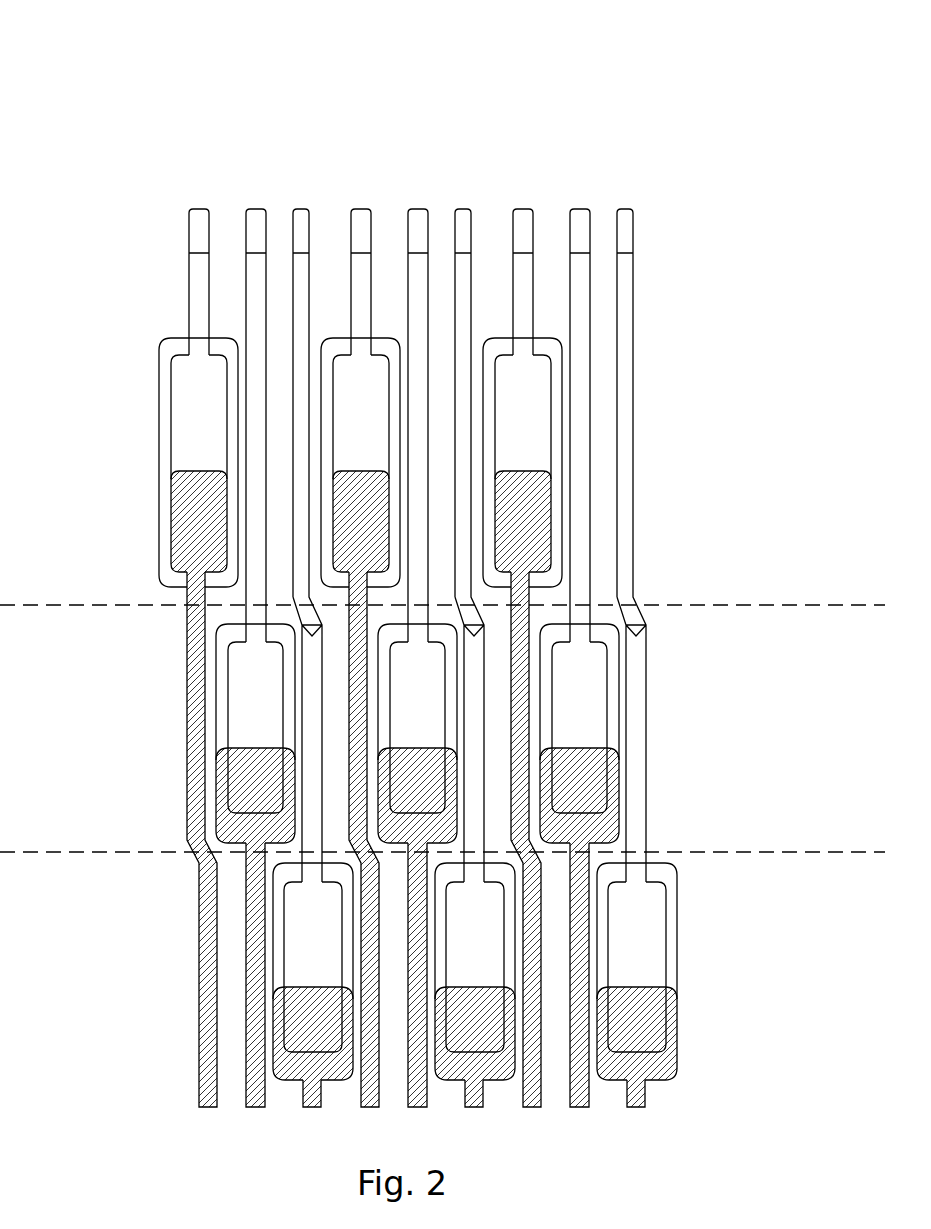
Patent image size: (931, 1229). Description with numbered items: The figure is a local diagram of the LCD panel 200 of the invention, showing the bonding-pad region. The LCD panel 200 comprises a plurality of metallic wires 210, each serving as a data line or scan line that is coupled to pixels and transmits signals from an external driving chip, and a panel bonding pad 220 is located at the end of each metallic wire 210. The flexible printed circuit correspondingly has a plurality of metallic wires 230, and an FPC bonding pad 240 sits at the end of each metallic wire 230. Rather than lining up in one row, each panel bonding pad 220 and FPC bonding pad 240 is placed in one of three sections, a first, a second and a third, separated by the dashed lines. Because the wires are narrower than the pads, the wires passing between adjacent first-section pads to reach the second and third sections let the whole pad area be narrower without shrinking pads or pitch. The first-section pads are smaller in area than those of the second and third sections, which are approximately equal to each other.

The LCD panel 200 is at (689, 182).
The metallic wire 210 is at (201, 970).
The panel bonding pad 220 is at (193, 557).
The metallic wire 230 is at (647, 697).
The FPC bonding pad 240 is at (158, 417).